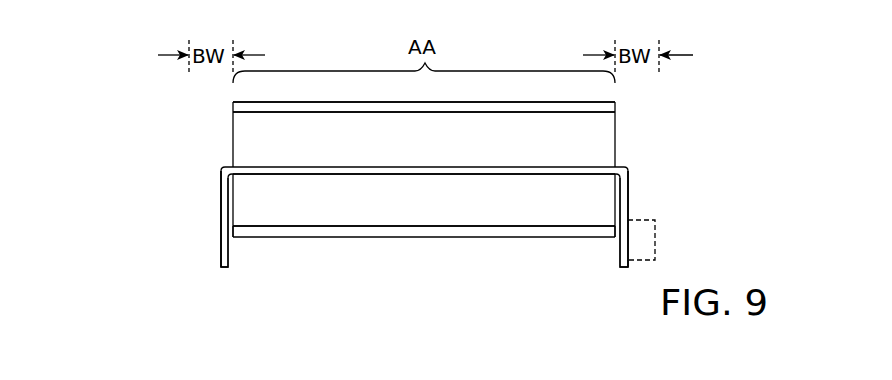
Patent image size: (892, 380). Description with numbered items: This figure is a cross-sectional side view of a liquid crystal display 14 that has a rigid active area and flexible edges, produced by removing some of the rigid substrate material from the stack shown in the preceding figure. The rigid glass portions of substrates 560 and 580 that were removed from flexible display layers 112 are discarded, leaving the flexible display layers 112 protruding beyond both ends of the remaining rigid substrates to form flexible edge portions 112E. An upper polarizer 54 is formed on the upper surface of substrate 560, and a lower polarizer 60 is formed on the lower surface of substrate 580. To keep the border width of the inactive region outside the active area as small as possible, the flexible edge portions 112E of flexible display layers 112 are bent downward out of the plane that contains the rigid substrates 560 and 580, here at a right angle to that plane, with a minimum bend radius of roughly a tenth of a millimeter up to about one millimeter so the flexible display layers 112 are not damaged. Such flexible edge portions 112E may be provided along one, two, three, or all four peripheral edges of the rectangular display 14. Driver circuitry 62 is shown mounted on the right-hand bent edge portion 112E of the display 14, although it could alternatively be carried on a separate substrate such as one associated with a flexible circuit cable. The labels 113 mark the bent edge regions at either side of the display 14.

The display 14 is at (427, 191).
The upper polarizer 54 is at (392, 107).
The substrate 560 is at (520, 130).
The lower polarizer 60 is at (370, 238).
The substrate 580 is at (503, 210).
The flexible display layers 112 is at (224, 268).
The flexible edge portions 112E is at (208, 167).
The driver circuitry 62 is at (656, 233).
The edge region 113 is at (149, 263).